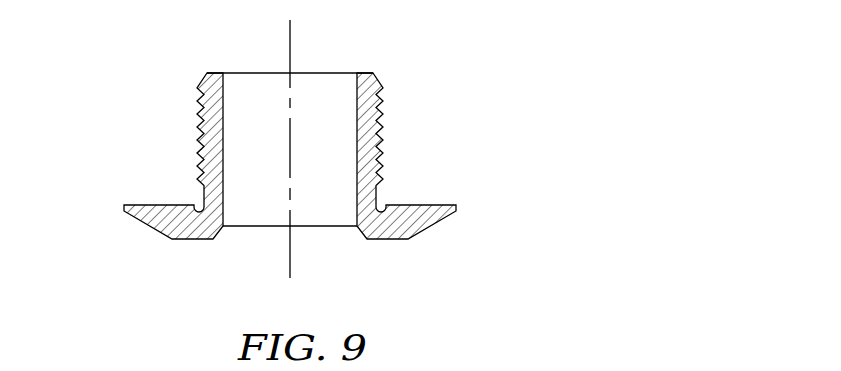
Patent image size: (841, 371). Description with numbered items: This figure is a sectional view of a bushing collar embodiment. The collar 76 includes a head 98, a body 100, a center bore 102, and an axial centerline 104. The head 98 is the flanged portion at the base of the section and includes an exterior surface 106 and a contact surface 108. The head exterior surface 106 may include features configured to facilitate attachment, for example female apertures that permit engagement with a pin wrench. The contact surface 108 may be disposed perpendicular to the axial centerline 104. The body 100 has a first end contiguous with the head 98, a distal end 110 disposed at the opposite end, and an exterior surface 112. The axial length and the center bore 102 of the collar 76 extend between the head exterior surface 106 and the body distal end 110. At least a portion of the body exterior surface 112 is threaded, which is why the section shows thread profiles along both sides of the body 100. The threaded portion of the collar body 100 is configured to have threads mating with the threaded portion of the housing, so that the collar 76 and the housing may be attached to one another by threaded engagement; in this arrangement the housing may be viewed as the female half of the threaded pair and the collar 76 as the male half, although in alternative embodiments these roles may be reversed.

The collar 76 is at (431, 100).
The head 98 is at (155, 251).
The body 100 is at (187, 130).
The center bore 102 is at (280, 169).
The axial centerline 104 is at (290, 32).
The head exterior surface 106 is at (390, 239).
The contact surface 108 is at (437, 205).
The distal end 110 is at (206, 73).
The body exterior surface 112 is at (383, 91).